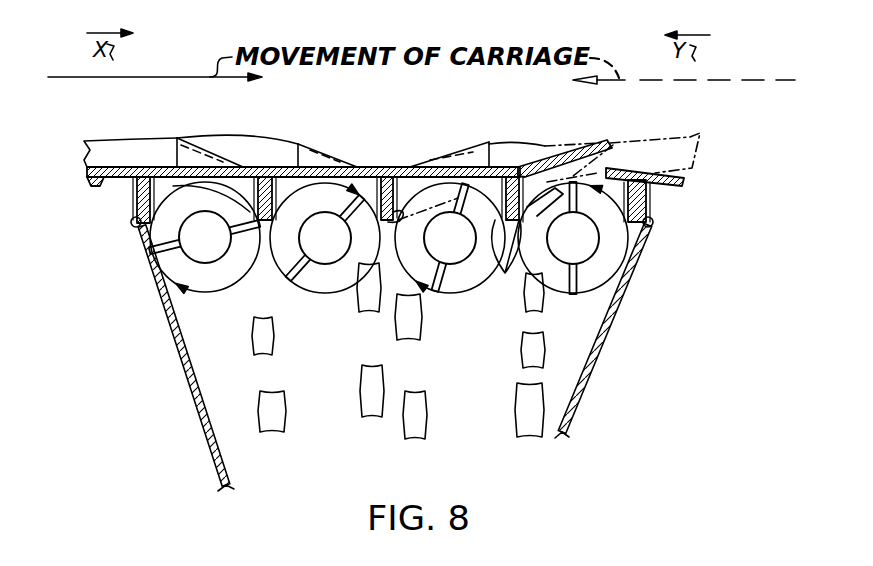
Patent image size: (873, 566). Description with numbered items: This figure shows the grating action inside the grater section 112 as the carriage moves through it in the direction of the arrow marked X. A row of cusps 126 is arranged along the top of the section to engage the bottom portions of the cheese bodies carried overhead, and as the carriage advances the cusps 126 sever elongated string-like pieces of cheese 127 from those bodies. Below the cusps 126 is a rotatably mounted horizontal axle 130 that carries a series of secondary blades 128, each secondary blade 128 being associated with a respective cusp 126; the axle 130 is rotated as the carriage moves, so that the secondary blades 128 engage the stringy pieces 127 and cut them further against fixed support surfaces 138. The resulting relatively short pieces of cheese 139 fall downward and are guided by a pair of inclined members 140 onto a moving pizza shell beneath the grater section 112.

The grater section 112 is at (436, 97).
The cusps 126 is at (298, 145).
The elongated string like pieces 127 is at (227, 195).
The secondary blades 128 is at (150, 250).
The horizontal axle 130 is at (258, 238).
The fixed support surfaces 138 is at (522, 343).
The relatively short pieces of cheese 139 is at (362, 372).
The inclined members 140 is at (617, 366).